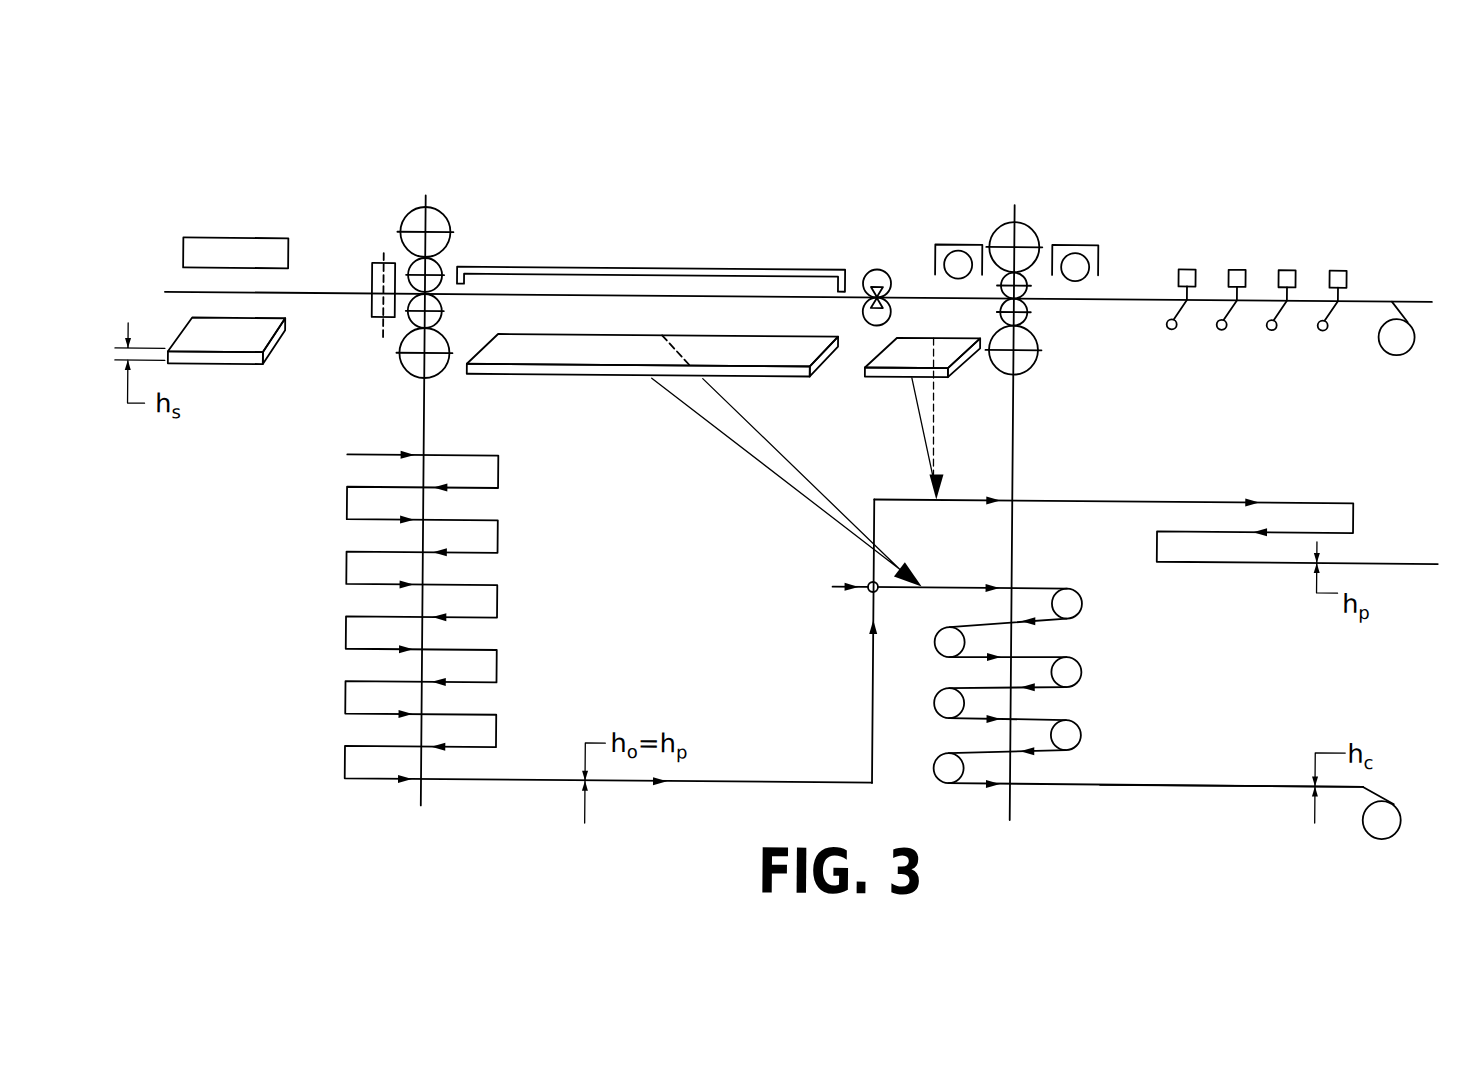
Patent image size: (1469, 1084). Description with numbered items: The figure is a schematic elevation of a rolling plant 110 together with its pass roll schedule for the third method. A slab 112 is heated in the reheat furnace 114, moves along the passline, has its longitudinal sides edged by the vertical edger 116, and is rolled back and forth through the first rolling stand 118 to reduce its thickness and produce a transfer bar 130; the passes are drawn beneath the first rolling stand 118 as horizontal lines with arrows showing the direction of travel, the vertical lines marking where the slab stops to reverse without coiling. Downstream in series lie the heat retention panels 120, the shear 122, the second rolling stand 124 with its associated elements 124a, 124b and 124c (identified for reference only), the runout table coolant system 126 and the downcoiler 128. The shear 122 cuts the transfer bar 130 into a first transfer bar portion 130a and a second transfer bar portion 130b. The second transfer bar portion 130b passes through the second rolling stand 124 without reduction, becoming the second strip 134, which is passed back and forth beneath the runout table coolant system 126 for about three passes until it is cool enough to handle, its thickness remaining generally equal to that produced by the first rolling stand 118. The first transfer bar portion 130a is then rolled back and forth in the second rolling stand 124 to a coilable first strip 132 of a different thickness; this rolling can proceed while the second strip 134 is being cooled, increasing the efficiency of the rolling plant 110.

The rolling plant 110 is at (778, 188).
The slab 112 is at (222, 363).
The reheat furnace 114 is at (233, 253).
The vertical edger 116 is at (368, 272).
The first rolling stand 118 is at (425, 222).
The heat retention panels 120 is at (616, 270).
The shear 122 is at (869, 278).
The second rolling stand 124 is at (1037, 485).
The upper work roll 124a is at (1020, 234).
The left backup roll housing 124b is at (941, 261).
The right backup roll housing 124c is at (1074, 260).
The runout table coolant system 126 is at (1236, 252).
The downcoiler 128 is at (1394, 338).
The transfer bar 130 is at (650, 422).
The first transfer bar portion 130a is at (562, 354).
The second transfer bar portion 130b is at (898, 357).
The first strip 132 is at (1138, 783).
The second strip 134 is at (1366, 560).